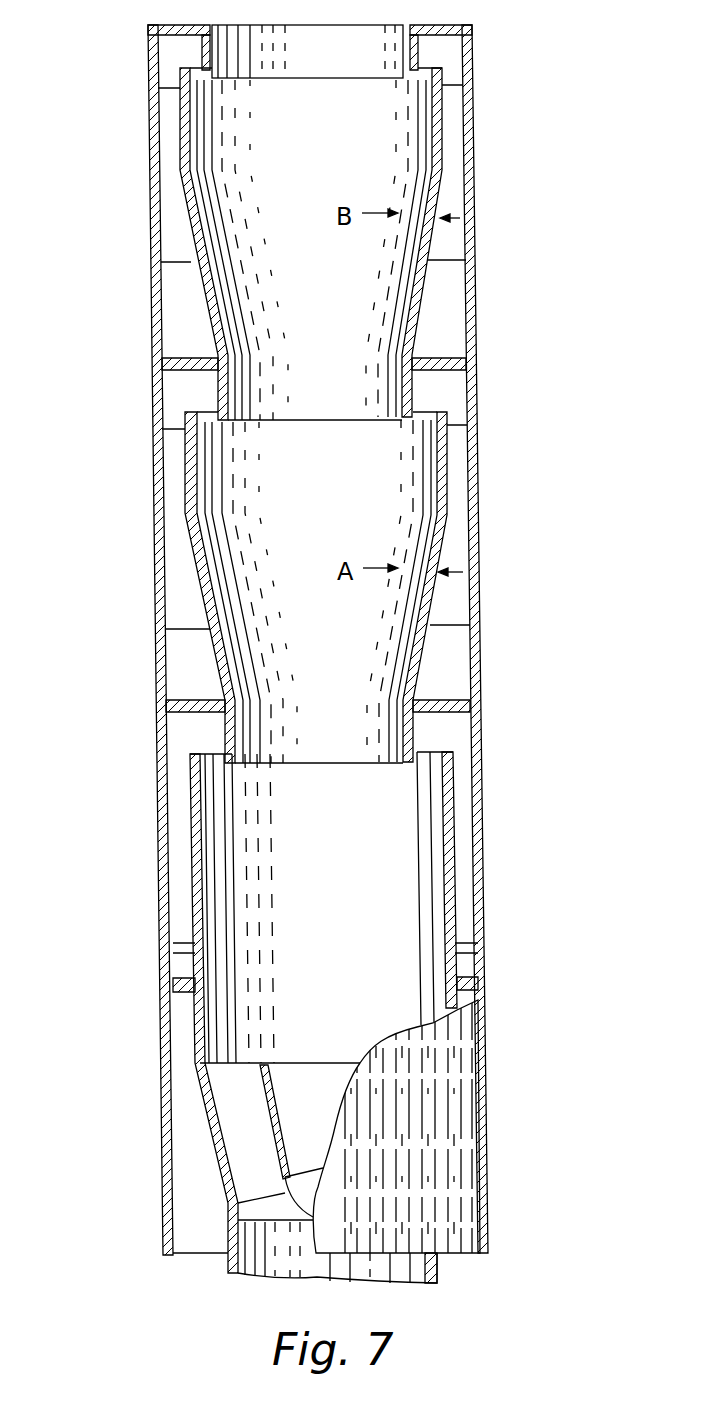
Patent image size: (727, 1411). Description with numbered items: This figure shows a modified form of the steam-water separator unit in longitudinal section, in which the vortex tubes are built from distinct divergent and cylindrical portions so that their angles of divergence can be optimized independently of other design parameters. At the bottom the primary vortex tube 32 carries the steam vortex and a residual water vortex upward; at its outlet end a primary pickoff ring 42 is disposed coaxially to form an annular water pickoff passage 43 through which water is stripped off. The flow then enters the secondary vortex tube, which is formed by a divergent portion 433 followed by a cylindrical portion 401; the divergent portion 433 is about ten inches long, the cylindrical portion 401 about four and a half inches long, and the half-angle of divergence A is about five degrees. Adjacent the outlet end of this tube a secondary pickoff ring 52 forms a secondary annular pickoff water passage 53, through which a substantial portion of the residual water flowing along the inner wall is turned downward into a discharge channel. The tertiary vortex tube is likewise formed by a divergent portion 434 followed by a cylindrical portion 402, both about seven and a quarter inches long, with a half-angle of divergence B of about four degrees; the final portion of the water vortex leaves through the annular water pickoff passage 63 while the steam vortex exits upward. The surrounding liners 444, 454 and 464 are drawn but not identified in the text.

The primary vortex tube 32 is at (455, 893).
The primary pickoff ring 42 is at (413, 727).
The secondary pickoff ring 52 is at (415, 383).
The annular water pickoff passage 43 is at (210, 755).
The secondary annular pickoff water passage 53 is at (207, 411).
The annular water pickoff passage 63 is at (186, 68).
The cylindrical portion 401 is at (445, 467).
The cylindrical portion 402 is at (442, 108).
The divergent portion 433 is at (427, 647).
The divergent portion 434 is at (427, 280).
The lower liner 444 is at (180, 887).
The middle liner 454 is at (175, 531).
The upper liner 464 is at (172, 180).